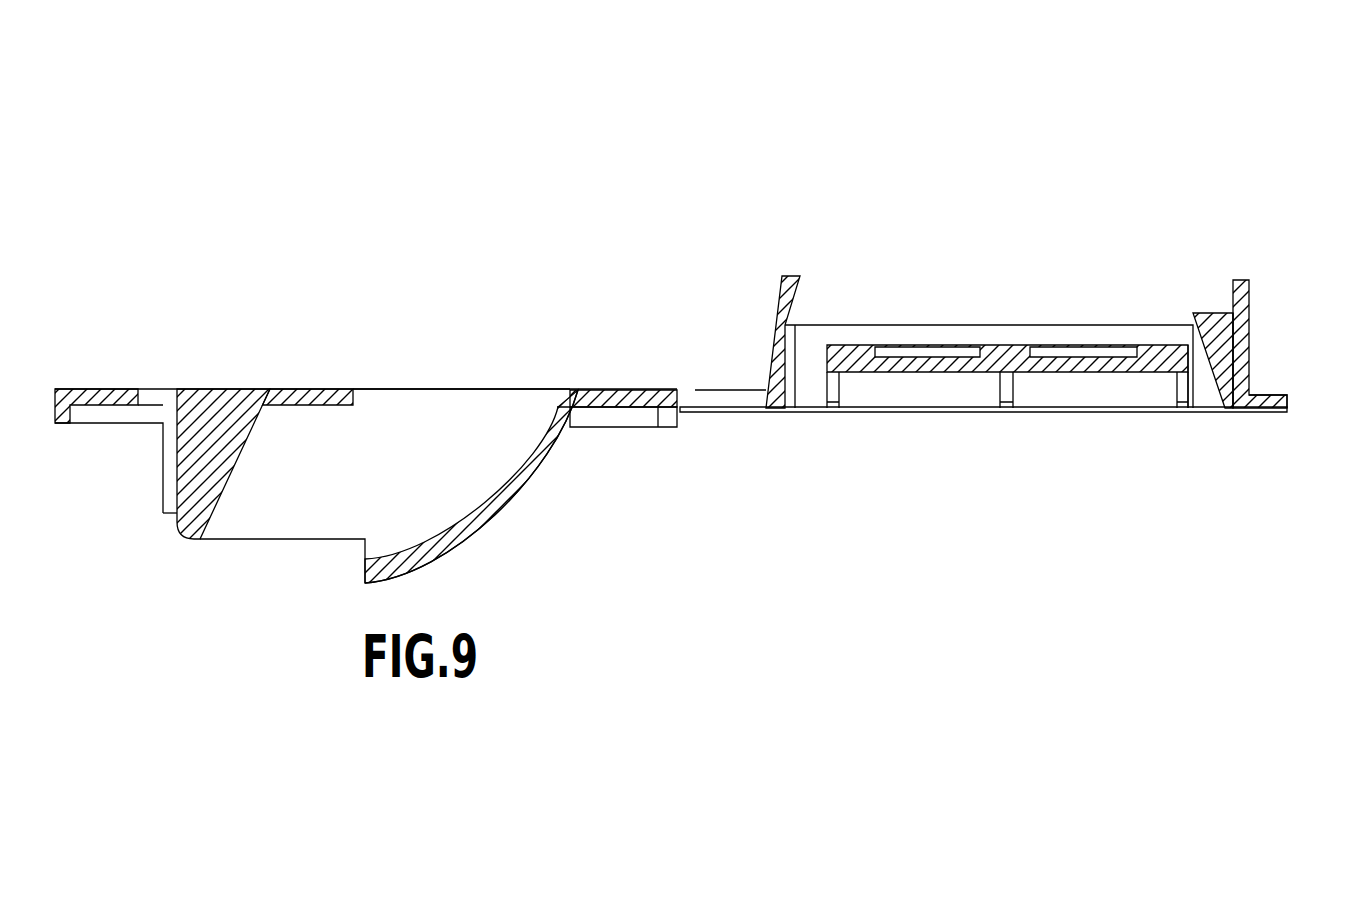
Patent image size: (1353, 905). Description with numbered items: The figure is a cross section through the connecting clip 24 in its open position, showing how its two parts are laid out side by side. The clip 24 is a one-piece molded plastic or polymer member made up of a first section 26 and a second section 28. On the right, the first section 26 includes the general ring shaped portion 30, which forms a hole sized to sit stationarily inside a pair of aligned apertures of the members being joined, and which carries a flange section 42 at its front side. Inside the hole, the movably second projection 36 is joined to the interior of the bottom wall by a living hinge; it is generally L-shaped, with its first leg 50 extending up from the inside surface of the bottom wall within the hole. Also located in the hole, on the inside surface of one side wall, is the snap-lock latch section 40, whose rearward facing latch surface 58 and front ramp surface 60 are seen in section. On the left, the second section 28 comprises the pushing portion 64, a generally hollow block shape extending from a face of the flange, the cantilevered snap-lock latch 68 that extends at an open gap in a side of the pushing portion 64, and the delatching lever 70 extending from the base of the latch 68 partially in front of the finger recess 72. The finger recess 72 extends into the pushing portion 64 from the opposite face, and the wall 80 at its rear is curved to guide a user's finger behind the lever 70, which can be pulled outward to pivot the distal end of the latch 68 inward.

The connecting clip 24 is at (1080, 78).
The first section 26 is at (1055, 413).
The second section 28 is at (98, 388).
The general ring shaped portion 30 is at (1182, 413).
The movably second projection 36 is at (985, 355).
The snap-lock latch section 40 is at (1198, 313).
The flange section 42 is at (1287, 412).
The first leg 50 is at (907, 410).
The latch surface 58 is at (1213, 312).
The front ramp surface 60 is at (1247, 357).
The pushing portion 64 is at (470, 544).
The cantilevered snap-lock latch 68 is at (163, 522).
The delatching lever 70 is at (322, 388).
The finger recess 72 is at (440, 427).
The wall 80 is at (525, 492).